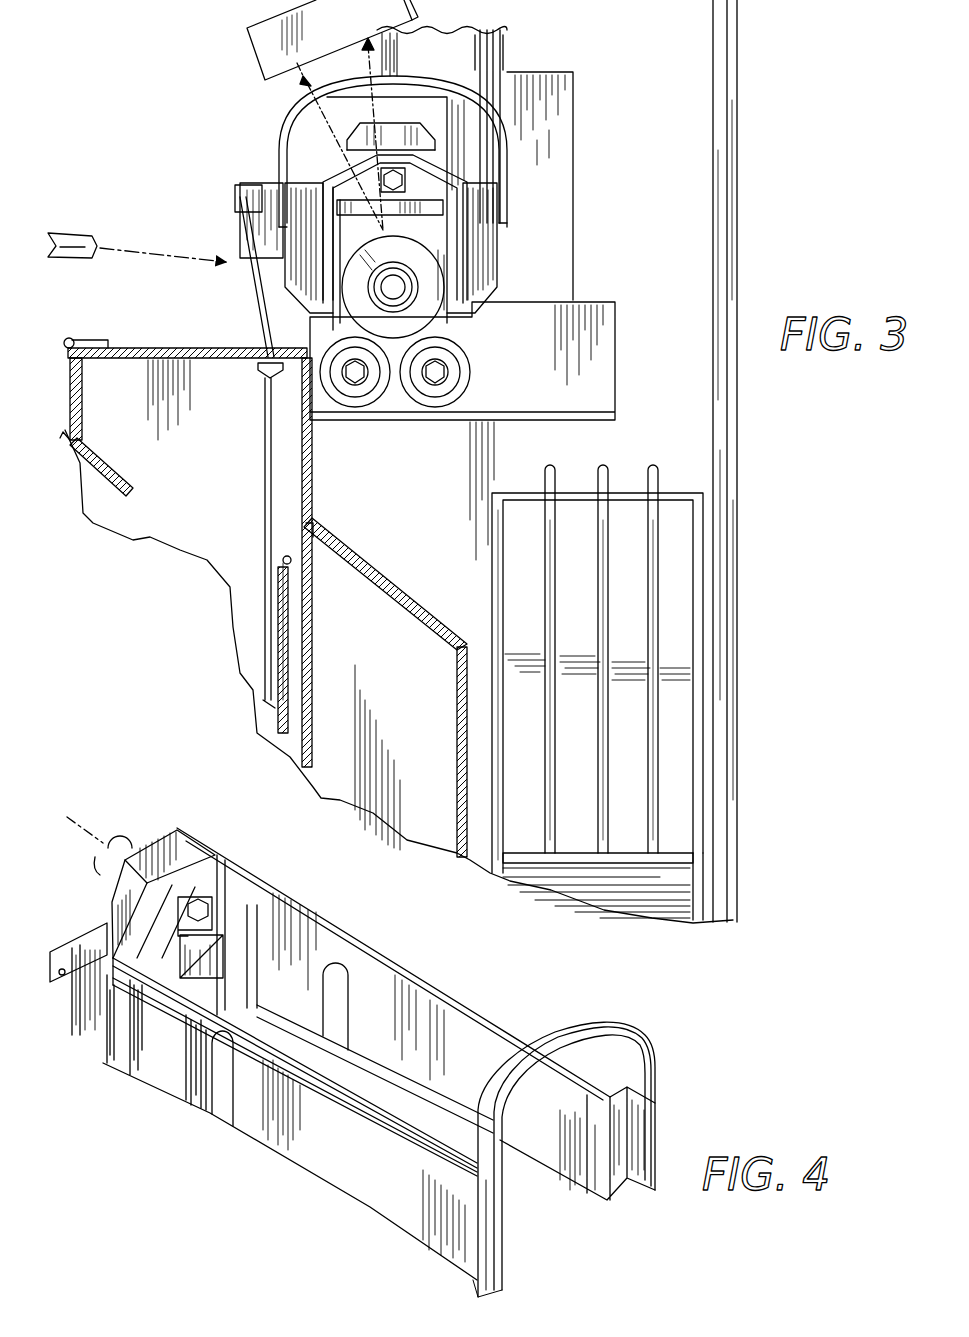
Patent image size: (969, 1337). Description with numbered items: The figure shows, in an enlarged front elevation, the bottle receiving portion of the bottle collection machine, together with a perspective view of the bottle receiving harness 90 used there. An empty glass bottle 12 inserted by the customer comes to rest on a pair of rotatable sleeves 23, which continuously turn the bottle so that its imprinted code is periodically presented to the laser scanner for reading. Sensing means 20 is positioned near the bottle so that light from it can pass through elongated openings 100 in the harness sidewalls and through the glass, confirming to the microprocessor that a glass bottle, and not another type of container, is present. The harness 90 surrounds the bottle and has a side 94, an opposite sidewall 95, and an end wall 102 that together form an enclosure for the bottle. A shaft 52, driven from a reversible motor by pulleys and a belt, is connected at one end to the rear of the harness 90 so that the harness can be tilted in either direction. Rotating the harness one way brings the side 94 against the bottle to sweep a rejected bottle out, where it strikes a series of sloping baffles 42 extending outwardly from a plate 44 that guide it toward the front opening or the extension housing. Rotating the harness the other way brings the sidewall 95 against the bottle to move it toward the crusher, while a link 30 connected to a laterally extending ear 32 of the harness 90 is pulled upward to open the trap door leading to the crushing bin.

In FIG. 3, the bottle 12 is at (430, 270).
In FIG. 3, the sensing means 20 is at (80, 238).
In FIG. 3, the rotatable sleeves 23 is at (467, 362).
In FIG. 3, the link 30 is at (260, 283).
In FIG. 3, the laterally extending ear 32 is at (240, 190).
In FIG. 3, the sloping baffles 42 is at (555, 468).
In FIG. 3, the plate 44 is at (674, 770).
In FIG. 4, the shaft 52 is at (137, 843).
In FIG. 3, the harness 90 is at (519, 187).
In FIG. 4, the harness 90 is at (500, 1017).
In FIG. 4, the side 94 is at (357, 1170).
In FIG. 4, the sidewall 95 is at (427, 1030).
In FIG. 4, the elongated openings 100 is at (360, 953).
In FIG. 3, the end wall 102 is at (443, 173).
In FIG. 4, the end wall 102 is at (240, 910).